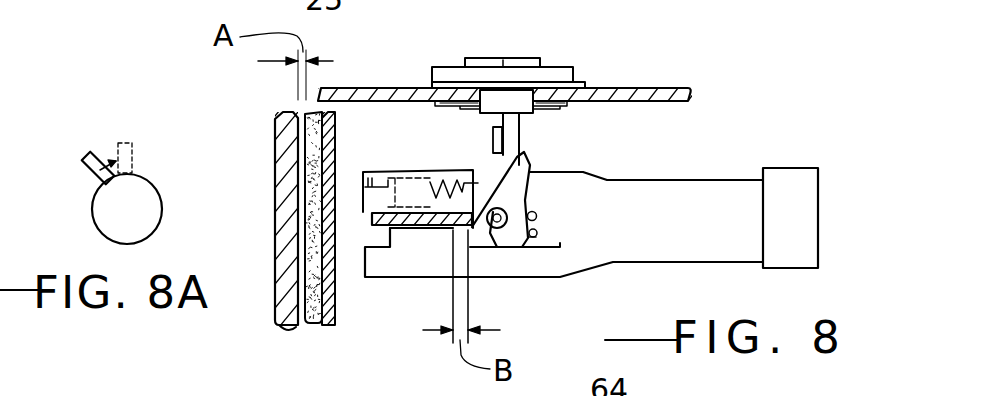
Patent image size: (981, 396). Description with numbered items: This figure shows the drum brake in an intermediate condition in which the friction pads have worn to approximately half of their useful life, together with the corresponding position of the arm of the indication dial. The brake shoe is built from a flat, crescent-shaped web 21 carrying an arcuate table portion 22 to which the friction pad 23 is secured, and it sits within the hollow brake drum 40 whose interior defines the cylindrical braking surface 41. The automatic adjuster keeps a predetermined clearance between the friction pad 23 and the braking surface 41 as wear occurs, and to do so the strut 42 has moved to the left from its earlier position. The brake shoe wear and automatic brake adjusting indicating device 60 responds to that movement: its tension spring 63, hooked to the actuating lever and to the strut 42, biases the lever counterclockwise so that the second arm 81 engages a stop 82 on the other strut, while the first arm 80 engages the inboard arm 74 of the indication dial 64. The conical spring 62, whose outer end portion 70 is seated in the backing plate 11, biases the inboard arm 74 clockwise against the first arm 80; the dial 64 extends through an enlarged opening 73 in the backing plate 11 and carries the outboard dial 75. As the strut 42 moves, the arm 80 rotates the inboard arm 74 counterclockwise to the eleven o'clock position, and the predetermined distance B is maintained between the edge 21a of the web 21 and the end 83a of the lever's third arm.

In FIG. 8, the backing plate 11 is at (663, 88).
In FIG. 8, the web portion 21 is at (348, 232).
In FIG. 8, the edge of the web 21a is at (510, 163).
In FIG. 8, the table portion 22 is at (337, 317).
In FIG. 8, the friction pad 23 is at (309, 324).
In FIG. 8, the brake drum 40 is at (277, 268).
In FIG. 8, the cylindrical braking surface 41 is at (302, 332).
In FIG. 8, the strut 42 is at (640, 262).
In FIG. 8, the brake shoe wear and automatic brake adjusting indicating device 60 is at (513, 280).
In FIG. 8, the conical spring 62 is at (560, 110).
In FIG. 8, the tension spring 63 is at (397, 174).
In FIG. 8A, the indication dial 64 is at (160, 191).
In FIG. 8, the indication dial 64 is at (573, 68).
In FIG. 8, the outer end portion 70 is at (440, 101).
In FIG. 8, the enlarged opening 73 is at (503, 60).
In FIG. 8A, the inboard arm 74 is at (100, 155).
In FIG. 8, the inboard arm 74 is at (492, 137).
In FIG. 8, the outboard dial 75 is at (527, 63).
In FIG. 8, the first arm 80 is at (505, 156).
In FIG. 8, the second arm 81 is at (536, 238).
In FIG. 8, the stop 82 is at (533, 213).
In FIG. 8, the end of the arm 83a is at (421, 251).